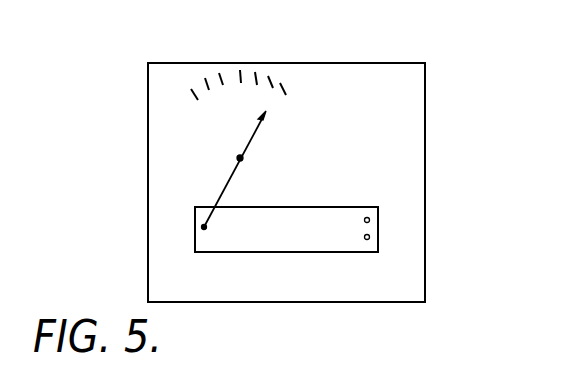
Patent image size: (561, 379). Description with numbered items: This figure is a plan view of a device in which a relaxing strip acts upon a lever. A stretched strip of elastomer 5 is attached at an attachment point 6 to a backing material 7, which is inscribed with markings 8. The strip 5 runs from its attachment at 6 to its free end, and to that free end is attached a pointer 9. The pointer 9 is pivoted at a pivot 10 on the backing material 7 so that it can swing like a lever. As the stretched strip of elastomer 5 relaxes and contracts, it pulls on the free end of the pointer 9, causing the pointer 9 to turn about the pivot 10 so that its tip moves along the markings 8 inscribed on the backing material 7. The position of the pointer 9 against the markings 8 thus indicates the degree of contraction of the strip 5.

The stretched strip of elastomer 5 is at (342, 225).
The attachment point 6 is at (370, 237).
The backing material 7 is at (402, 275).
The markings 8 is at (222, 84).
The pointer 9 is at (222, 188).
The pivot 10 is at (240, 157).